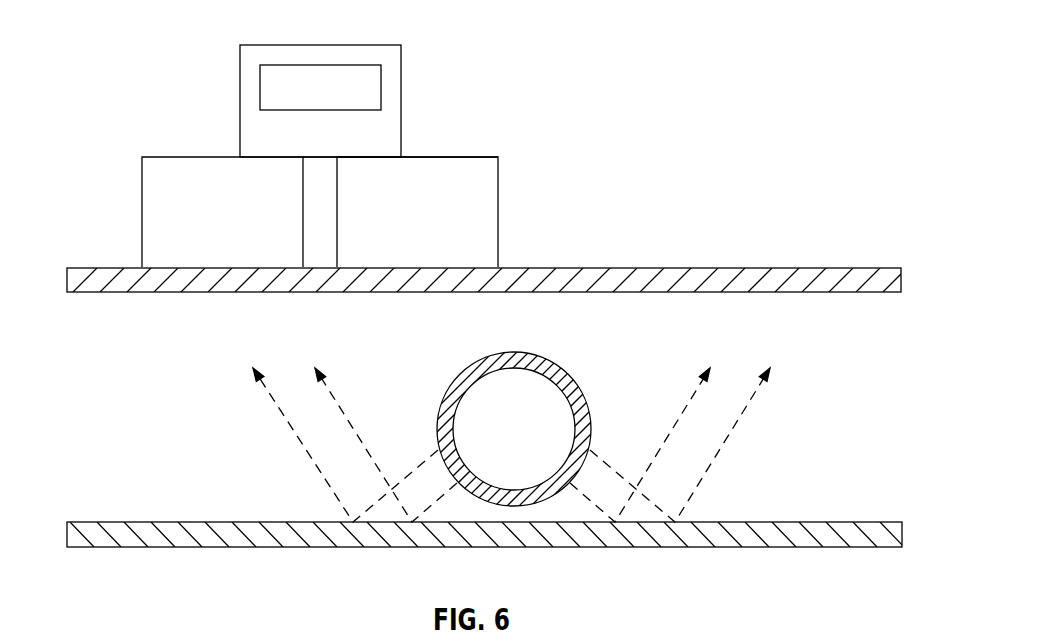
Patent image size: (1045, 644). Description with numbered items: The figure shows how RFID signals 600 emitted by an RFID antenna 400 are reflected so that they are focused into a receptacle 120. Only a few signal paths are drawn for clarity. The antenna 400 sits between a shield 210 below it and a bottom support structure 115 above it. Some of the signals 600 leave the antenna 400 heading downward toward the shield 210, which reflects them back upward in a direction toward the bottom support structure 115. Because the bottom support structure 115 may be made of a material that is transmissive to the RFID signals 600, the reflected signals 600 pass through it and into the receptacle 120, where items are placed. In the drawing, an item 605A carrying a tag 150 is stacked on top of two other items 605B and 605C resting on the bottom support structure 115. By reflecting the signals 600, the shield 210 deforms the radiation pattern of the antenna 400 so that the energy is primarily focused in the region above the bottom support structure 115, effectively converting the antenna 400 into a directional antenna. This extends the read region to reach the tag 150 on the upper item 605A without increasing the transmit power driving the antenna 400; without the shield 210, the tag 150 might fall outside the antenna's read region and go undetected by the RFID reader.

The receptacle 120 is at (658, 70).
The item 605A is at (401, 110).
The tag 150 is at (258, 82).
The item 605C is at (142, 212).
The item 605B is at (498, 192).
The bottom support structure 115 is at (739, 268).
The RFID antenna 400 is at (513, 352).
The reflected RFID signals 600 is at (688, 410).
The shield 210 is at (733, 547).